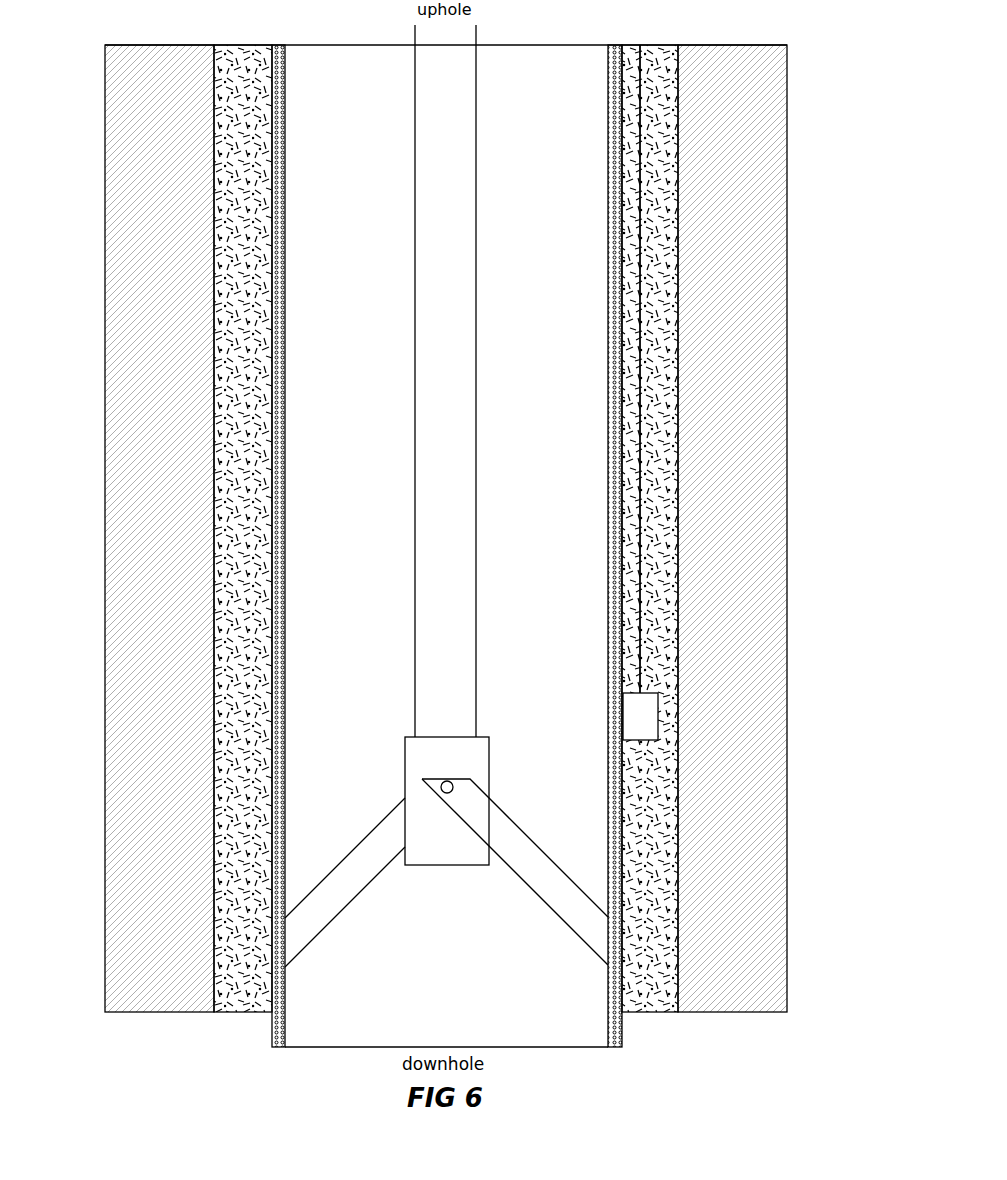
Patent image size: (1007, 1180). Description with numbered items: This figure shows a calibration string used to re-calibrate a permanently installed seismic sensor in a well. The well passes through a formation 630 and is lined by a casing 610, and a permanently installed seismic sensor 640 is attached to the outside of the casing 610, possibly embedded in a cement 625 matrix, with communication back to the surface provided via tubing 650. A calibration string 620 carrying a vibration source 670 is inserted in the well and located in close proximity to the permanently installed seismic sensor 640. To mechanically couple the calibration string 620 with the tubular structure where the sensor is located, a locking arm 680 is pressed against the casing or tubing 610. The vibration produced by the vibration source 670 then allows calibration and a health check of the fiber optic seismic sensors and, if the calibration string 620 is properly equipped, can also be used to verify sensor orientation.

The casing 610 is at (270, 122).
The calibration string 620 is at (445, 238).
The cement 625 is at (242, 300).
The formation 630 is at (172, 397).
The permanently installed seismic sensor 640 is at (640, 718).
The tubing 650 is at (640, 195).
The vibration source 670 is at (440, 838).
The locking arm 680 is at (498, 828).